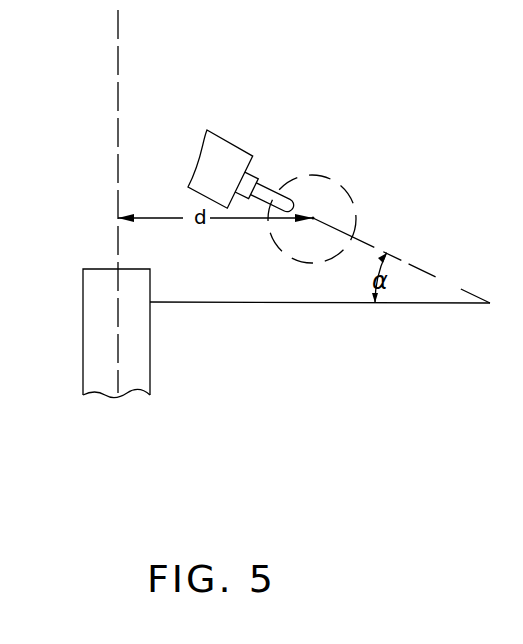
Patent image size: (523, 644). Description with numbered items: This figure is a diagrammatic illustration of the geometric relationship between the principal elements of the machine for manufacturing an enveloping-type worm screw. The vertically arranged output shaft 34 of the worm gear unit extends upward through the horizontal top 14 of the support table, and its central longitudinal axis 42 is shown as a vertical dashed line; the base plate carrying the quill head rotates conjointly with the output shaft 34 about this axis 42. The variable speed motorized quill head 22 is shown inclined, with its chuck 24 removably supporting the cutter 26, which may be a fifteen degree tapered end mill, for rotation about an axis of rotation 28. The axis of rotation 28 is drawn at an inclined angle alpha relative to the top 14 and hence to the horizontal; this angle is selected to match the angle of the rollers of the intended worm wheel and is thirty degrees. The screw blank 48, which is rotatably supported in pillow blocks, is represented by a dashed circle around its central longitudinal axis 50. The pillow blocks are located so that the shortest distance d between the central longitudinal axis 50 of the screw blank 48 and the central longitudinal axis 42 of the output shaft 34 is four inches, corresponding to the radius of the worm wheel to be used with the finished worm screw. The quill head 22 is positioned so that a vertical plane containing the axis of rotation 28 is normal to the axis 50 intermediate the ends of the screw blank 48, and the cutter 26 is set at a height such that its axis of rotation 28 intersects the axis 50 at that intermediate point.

The horizontal top 14 is at (183, 302).
The quill head 22 is at (188, 188).
The chuck 24 is at (256, 181).
The cutter 26 is at (271, 190).
The axis of rotation 28 is at (445, 283).
The output shaft 34 is at (87, 348).
The central longitudinal axis 42 is at (117, 90).
The screw blank 48 is at (329, 179).
The central longitudinal axis 50 is at (313, 218).